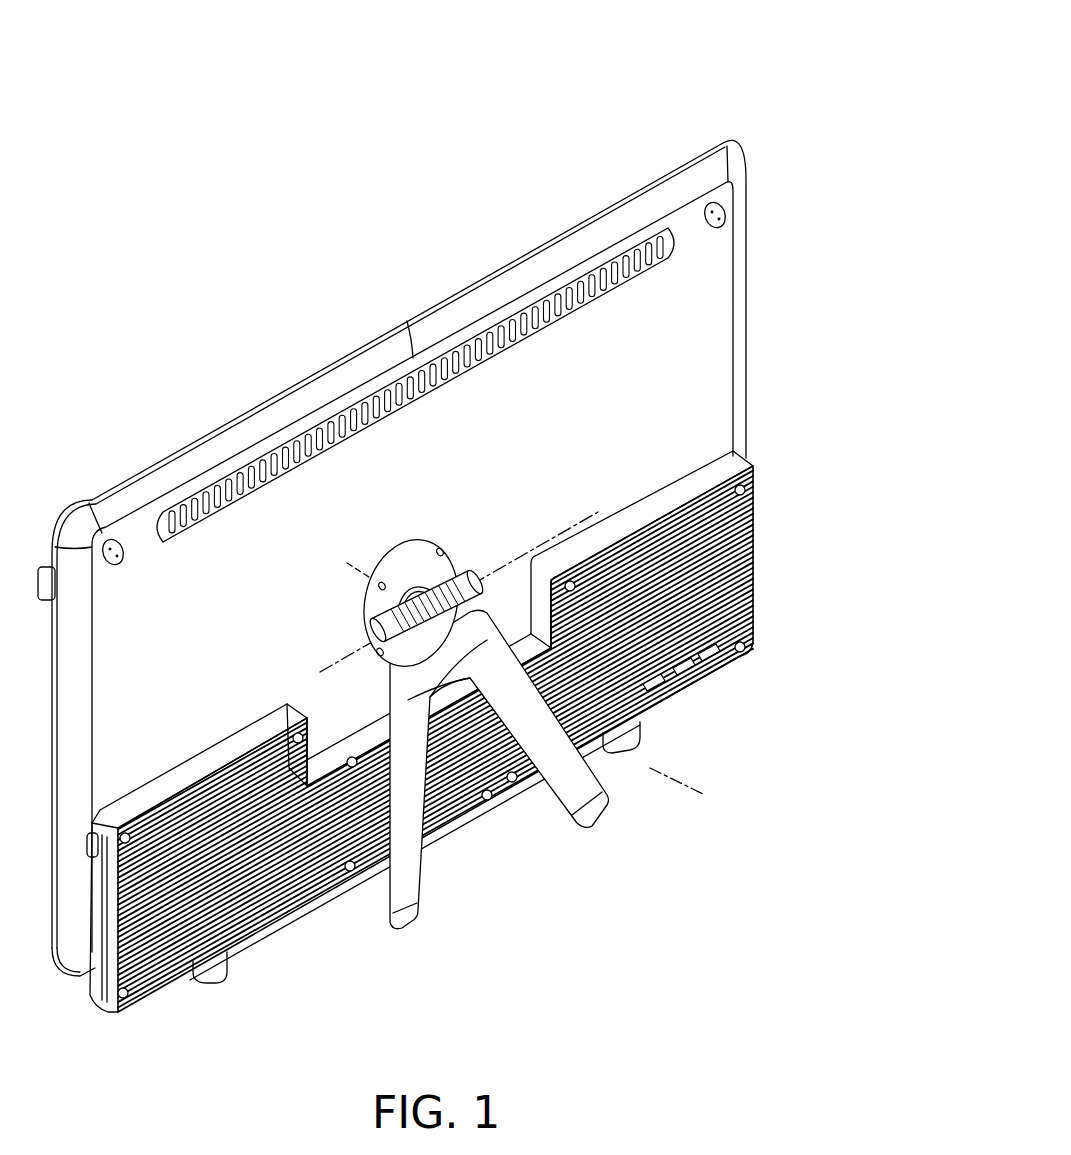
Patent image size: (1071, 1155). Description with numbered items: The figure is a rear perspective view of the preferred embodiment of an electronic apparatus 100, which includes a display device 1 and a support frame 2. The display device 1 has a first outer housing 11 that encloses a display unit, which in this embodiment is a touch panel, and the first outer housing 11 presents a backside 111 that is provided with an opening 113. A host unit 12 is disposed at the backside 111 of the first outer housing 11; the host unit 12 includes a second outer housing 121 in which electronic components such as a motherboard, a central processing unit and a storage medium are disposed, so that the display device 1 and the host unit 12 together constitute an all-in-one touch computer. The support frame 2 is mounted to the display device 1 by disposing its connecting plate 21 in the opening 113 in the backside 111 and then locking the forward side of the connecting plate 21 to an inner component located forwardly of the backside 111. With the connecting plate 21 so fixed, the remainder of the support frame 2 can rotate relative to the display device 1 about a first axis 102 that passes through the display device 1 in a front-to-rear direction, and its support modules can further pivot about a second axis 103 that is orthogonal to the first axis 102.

The electronic apparatus 100 is at (442, 513).
The display device 1 is at (442, 562).
The first outer housing 11 is at (650, 207).
The backside 111 is at (703, 323).
The opening 113 is at (405, 567).
The host unit 12 is at (467, 731).
The second outer housing 121 is at (755, 540).
The second axis 103 is at (594, 516).
The first axis 102 is at (643, 755).
The support frame 2 is at (481, 699).
The connecting plate 21 is at (420, 557).